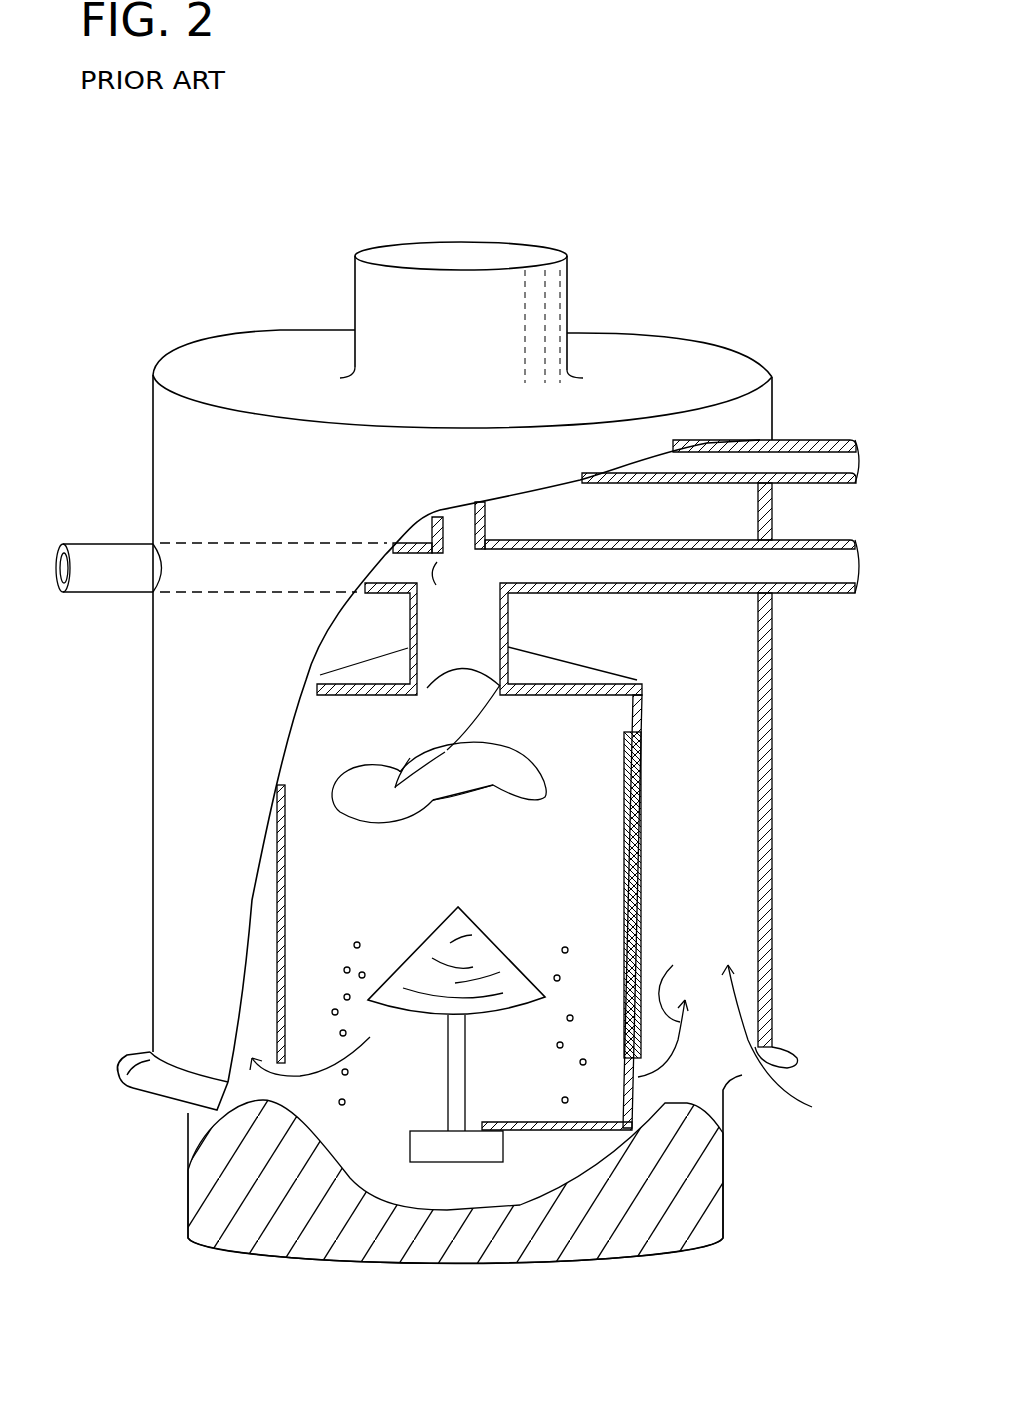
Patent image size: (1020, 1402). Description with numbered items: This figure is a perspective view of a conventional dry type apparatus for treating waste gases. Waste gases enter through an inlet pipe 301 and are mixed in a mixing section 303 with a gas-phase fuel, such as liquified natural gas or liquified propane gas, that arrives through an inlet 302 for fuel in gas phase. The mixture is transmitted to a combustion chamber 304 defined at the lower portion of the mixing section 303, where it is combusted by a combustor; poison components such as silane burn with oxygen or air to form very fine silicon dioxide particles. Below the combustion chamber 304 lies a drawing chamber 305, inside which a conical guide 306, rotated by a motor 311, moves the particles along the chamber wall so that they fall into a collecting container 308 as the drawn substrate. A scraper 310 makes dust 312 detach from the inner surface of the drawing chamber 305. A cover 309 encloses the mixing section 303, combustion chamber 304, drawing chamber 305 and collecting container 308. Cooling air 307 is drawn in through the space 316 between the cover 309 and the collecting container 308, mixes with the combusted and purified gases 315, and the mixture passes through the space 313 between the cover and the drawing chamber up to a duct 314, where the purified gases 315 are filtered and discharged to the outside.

The inlet pipe 301 is at (822, 448).
The inlet for fuel in gas phase 302 is at (98, 553).
The mixing section 303 is at (466, 622).
The combustion chamber 304 is at (503, 680).
The drawing chamber 305 is at (360, 912).
The conical guide 306 is at (485, 947).
The cooling air 307 is at (797, 1097).
The collecting container 308 is at (727, 1112).
The cover 309 is at (773, 790).
The scraper 310 is at (625, 780).
The motor 311 is at (457, 1155).
The dust 312 is at (354, 945).
The space between the cover and the drawing chamber 313 is at (640, 752).
The duct 314 is at (362, 297).
The purified gases 315 is at (242, 1282).
The space between the cover and the collecting container 316 is at (167, 1130).